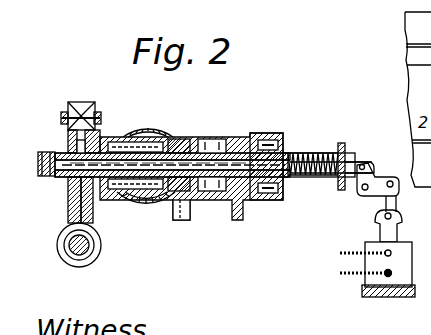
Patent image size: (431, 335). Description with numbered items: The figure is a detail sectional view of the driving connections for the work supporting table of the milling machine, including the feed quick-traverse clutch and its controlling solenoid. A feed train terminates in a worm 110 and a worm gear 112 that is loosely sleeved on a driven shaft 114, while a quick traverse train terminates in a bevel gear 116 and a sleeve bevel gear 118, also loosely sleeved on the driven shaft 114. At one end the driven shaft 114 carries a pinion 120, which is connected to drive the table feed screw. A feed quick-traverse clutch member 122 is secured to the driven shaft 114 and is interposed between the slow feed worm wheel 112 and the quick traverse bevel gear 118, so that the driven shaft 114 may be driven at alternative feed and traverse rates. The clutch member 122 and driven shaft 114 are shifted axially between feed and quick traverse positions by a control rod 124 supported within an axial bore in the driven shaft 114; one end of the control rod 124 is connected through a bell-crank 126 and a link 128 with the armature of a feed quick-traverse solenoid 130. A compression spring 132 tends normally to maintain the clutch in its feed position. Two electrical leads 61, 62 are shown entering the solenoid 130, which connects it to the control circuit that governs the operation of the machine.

The worm 110 is at (97, 262).
The worm gear 112 is at (80, 102).
The driven shaft 114 is at (56, 177).
The bevel gear 116 is at (138, 203).
The sleeve bevel gear 118 is at (185, 216).
The pinion 120 is at (264, 202).
The feed quick-traverse clutch member 122 is at (110, 141).
The control rod 124 is at (195, 163).
The bell-crank 126 is at (372, 181).
The link 128 is at (386, 206).
The feed quick-traverse solenoid 130 is at (392, 280).
The compression spring 132 is at (310, 154).
The wire 61 is at (340, 239).
The wire 62 is at (340, 273).